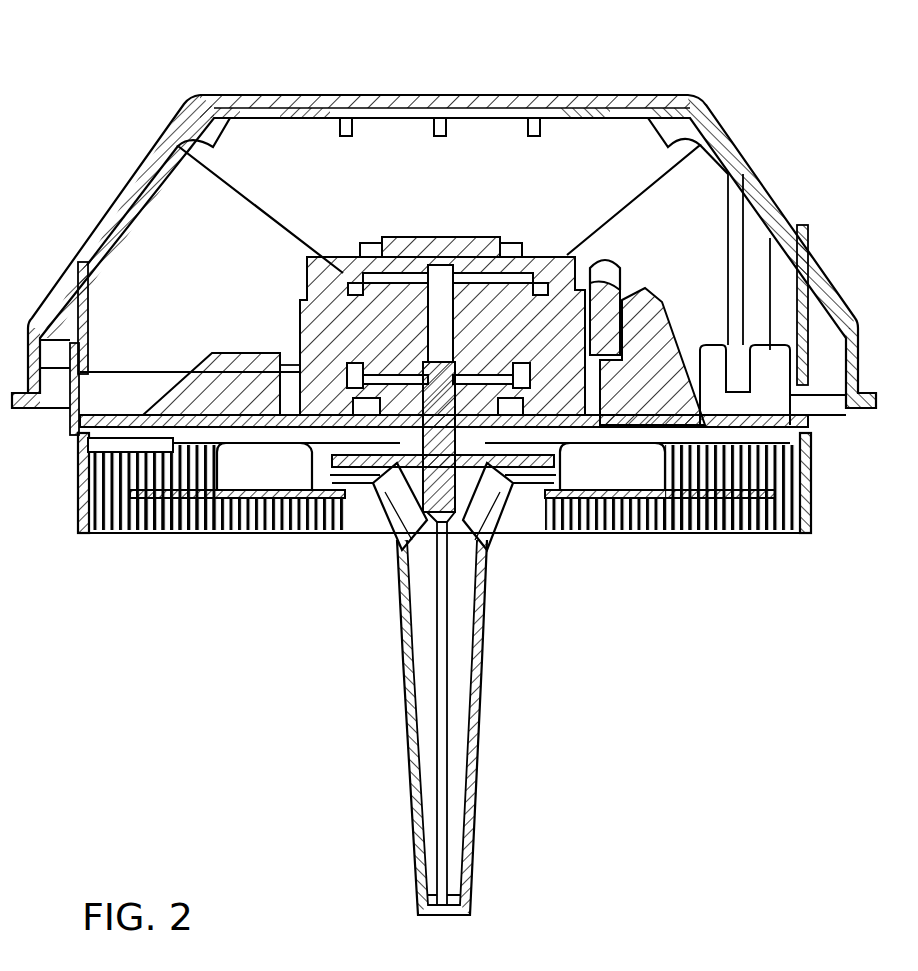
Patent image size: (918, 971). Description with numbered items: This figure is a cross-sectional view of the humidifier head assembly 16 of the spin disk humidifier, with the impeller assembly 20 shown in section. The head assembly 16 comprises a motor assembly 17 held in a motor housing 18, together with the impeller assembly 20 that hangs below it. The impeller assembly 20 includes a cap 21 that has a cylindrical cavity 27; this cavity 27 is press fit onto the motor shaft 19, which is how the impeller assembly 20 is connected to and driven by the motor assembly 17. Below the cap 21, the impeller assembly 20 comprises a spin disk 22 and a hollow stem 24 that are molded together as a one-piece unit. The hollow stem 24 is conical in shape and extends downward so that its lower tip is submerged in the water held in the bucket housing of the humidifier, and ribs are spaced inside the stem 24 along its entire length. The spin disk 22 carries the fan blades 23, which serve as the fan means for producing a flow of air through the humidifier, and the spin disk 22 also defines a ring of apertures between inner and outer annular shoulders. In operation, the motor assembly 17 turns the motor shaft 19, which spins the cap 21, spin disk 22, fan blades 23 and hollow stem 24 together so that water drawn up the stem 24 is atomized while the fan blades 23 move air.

The humidifier head assembly 16 is at (713, 75).
The motor assembly 17 is at (320, 335).
The motor housing 18 is at (818, 420).
The motor shaft 19 is at (480, 557).
The impeller assembly 20 is at (497, 677).
The cap 21 is at (340, 532).
The spin disk 22 is at (640, 497).
The fan blades 23 is at (265, 532).
The hollow stem 24 is at (472, 842).
The cylindrical cavity 27 is at (402, 590).